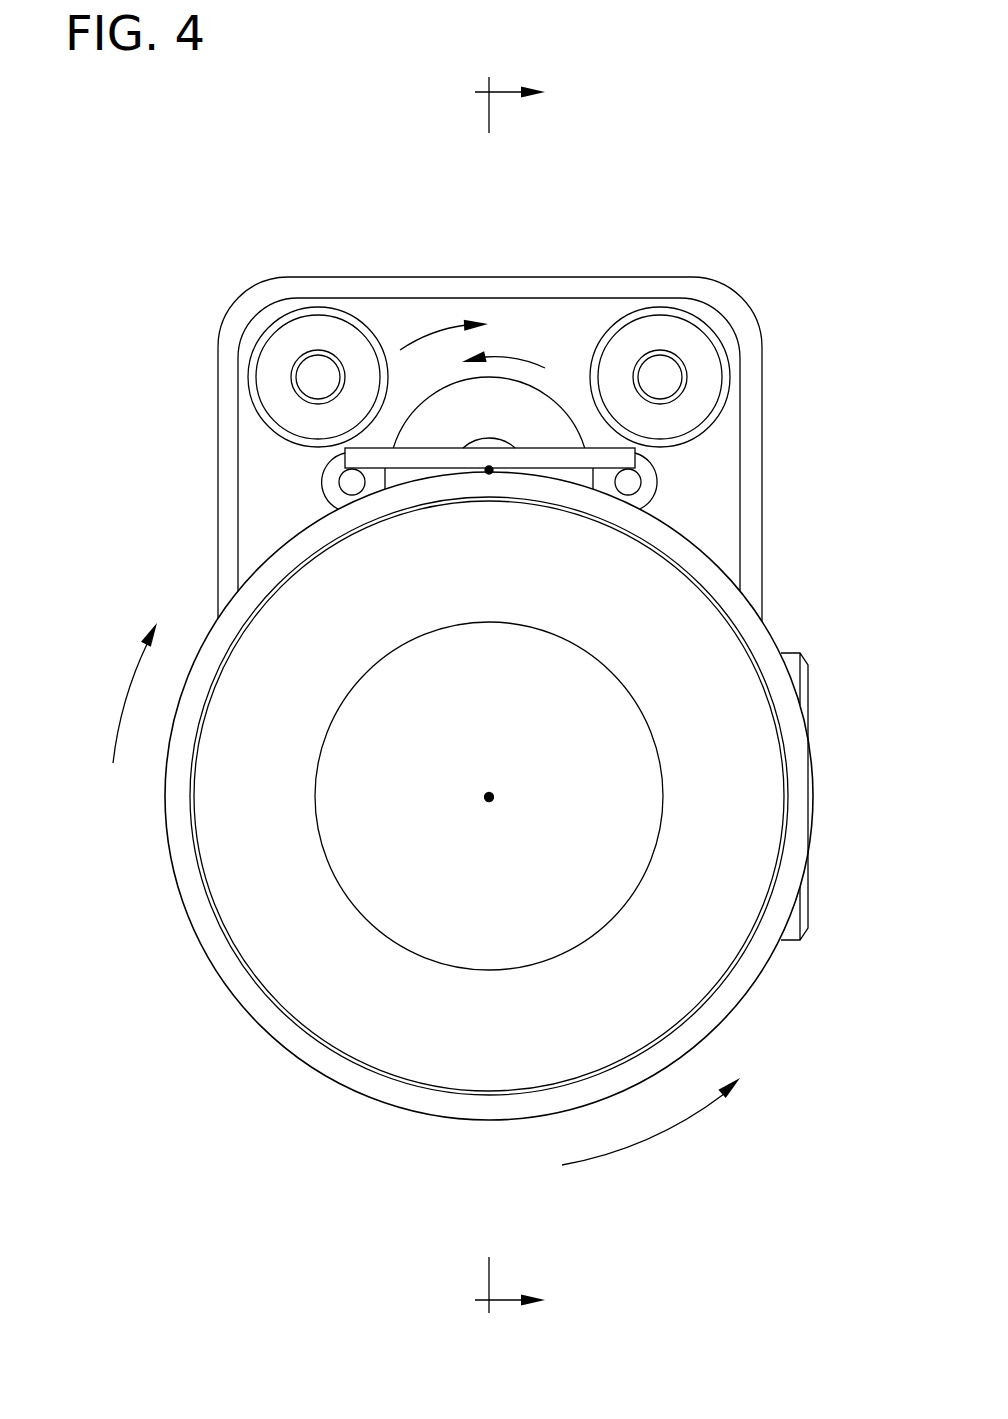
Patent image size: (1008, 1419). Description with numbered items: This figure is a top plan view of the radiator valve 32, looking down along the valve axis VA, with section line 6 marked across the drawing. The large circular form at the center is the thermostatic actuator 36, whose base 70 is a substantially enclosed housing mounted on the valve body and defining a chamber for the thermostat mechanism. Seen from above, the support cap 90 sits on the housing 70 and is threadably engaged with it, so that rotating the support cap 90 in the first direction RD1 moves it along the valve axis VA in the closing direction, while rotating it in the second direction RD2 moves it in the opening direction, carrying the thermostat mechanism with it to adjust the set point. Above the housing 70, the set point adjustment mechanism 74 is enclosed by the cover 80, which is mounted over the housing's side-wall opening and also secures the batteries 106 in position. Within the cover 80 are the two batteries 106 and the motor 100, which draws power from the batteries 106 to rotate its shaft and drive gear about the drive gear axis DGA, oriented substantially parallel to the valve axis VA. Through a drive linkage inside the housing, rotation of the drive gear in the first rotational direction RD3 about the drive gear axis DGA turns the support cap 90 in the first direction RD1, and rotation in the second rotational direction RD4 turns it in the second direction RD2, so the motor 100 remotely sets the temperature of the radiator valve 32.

The section line 6- 6 is at (501, 697).
The radiator valve 32 is at (114, 1222).
The thermostatic actuator 36 is at (298, 1093).
The base 70 is at (750, 973).
The set point adjustment mechanism 74 is at (394, 296).
The cover 80 is at (595, 285).
The support cap 90 is at (775, 783).
The motor 100 is at (463, 424).
The batteries 106 is at (278, 322).
The valve axis VA is at (489, 801).
The drive gear axis DGA is at (489, 474).
The first direction RD1 is at (130, 682).
The second direction RD2 is at (643, 1142).
The first rotational direction RD3 is at (538, 365).
The second rotational direction RD4 is at (430, 333).